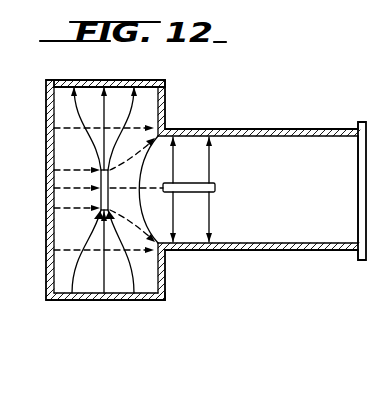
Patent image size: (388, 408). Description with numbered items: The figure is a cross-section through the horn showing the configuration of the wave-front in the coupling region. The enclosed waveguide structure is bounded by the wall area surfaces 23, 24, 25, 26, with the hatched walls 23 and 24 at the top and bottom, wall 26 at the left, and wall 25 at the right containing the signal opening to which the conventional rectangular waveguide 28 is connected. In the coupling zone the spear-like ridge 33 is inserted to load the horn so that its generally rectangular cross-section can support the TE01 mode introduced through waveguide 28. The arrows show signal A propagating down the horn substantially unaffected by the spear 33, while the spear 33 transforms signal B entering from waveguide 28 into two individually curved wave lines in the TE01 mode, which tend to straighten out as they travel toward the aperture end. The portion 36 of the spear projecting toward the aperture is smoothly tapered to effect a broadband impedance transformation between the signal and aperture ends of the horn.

The wall area surface 23 is at (99, 82).
The wall area surface 24 is at (110, 300).
The wall area surface 25 is at (167, 117).
The wall area surface 26 is at (45, 158).
The rectangular waveguide 28 is at (255, 130).
The spear-like ridge 33 is at (109, 182).
The tapered portion of spear 36 is at (216, 188).